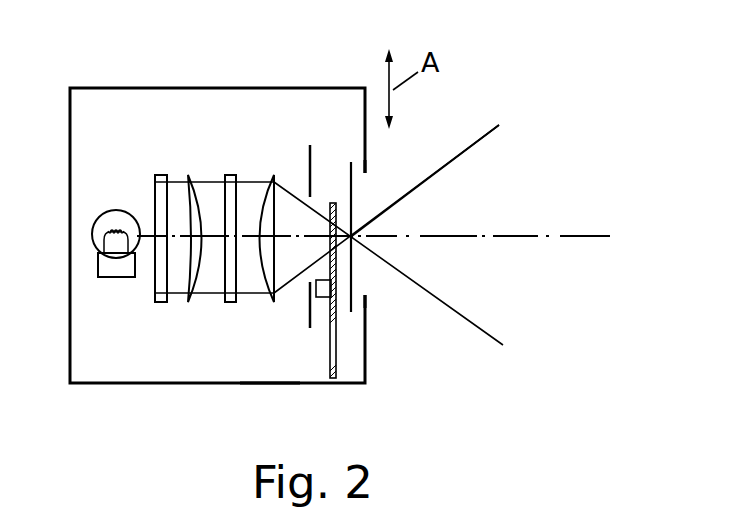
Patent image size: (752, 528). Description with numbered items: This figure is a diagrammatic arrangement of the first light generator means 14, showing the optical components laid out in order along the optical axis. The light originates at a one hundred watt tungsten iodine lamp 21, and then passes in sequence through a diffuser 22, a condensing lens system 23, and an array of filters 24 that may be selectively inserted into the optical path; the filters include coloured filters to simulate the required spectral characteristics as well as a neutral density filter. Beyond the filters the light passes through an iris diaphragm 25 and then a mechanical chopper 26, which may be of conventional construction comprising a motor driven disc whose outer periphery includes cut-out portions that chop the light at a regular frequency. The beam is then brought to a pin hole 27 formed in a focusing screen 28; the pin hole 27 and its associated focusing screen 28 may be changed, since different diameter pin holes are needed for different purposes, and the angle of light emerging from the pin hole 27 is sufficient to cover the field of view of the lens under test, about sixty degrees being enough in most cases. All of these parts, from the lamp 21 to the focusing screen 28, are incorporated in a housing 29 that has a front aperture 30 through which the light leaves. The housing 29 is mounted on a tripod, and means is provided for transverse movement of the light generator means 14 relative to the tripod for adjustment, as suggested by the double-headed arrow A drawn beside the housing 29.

The light generator means 14 is at (162, 88).
The tungsten iodine lamp 21 is at (115, 268).
The diffuser 22 is at (155, 203).
The condensing lens system 23 is at (265, 303).
The array of filters 24 is at (232, 170).
The iris diaphragm 25 is at (307, 310).
The mechanical chopper 26 is at (337, 373).
The pin hole 27 is at (360, 222).
The focusing screen 28 is at (355, 275).
The housing 29 is at (263, 385).
The front aperture 30 is at (368, 168).